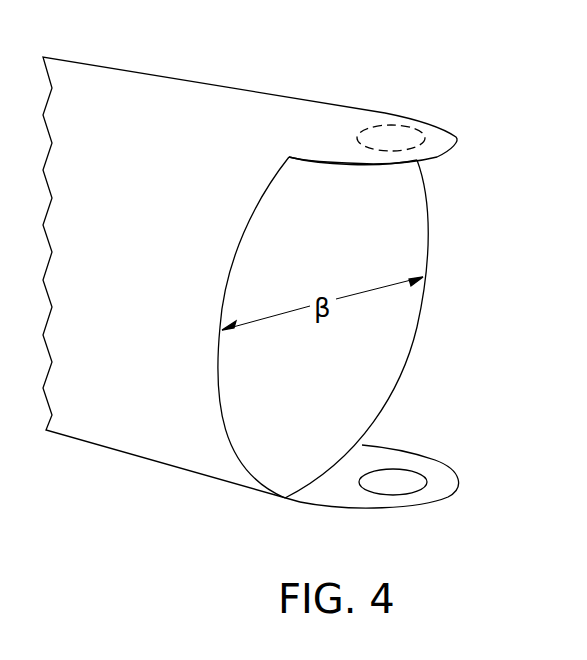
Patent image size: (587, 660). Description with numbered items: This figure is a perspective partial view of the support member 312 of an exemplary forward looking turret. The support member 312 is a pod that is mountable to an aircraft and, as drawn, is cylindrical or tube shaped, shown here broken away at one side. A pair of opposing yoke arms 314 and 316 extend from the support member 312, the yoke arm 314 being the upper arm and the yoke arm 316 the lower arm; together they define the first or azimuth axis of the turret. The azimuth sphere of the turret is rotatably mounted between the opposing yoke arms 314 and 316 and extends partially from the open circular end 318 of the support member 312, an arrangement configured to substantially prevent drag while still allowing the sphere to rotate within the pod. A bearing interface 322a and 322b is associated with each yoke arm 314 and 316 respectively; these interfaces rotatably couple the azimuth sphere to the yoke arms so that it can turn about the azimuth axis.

The support member 312 is at (148, 75).
The yoke arm 314 is at (458, 136).
The yoke arm 316 is at (360, 510).
The open circular end 318 is at (430, 228).
The bearing interface 322a is at (395, 125).
The bearing interface 322b is at (400, 469).